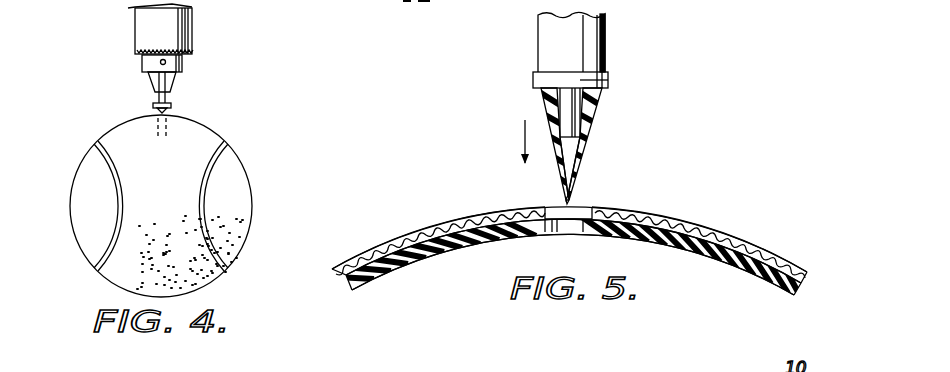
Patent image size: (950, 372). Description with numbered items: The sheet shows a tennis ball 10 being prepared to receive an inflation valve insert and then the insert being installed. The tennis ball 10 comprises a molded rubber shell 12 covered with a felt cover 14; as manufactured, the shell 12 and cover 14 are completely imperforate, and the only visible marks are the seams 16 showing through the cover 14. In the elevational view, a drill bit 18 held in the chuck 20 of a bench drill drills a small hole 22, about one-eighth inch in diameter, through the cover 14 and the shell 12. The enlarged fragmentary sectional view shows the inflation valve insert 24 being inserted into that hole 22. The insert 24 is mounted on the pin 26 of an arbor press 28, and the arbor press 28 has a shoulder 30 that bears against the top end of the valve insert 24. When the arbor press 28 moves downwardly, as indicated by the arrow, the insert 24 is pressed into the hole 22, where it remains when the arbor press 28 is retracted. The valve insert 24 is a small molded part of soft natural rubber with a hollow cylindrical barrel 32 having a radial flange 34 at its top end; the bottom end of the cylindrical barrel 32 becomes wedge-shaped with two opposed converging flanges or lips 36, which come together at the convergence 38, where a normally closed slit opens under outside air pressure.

In FIG. 4, the tennis ball 10 is at (238, 152).
In FIG. 5, the tennis ball 10 is at (722, 215).
In FIG. 5, the molded rubber shell 12 is at (460, 240).
In FIG. 4, the felt cover 14 is at (167, 222).
In FIG. 5, the felt cover 14 is at (433, 230).
In FIG. 4, the seams 16 is at (112, 255).
In FIG. 4, the drill bit 18 is at (159, 100).
In FIG. 4, the chuck 20 is at (185, 63).
In FIG. 5, the hole 22 is at (578, 232).
In FIG. 5, the inflation valve insert 24 is at (598, 134).
In FIG. 5, the pin 26 is at (568, 111).
In FIG. 5, the arbor press 28 is at (560, 46).
In FIG. 5, the shoulder 30 is at (583, 80).
In FIG. 5, the hollow cylindrical barrel 32 is at (600, 115).
In FIG. 5, the radial flange 34 is at (545, 95).
In FIG. 5, the converging flanges or lips 36 is at (553, 170).
In FIG. 5, the convergence of the flanges 38 is at (558, 198).